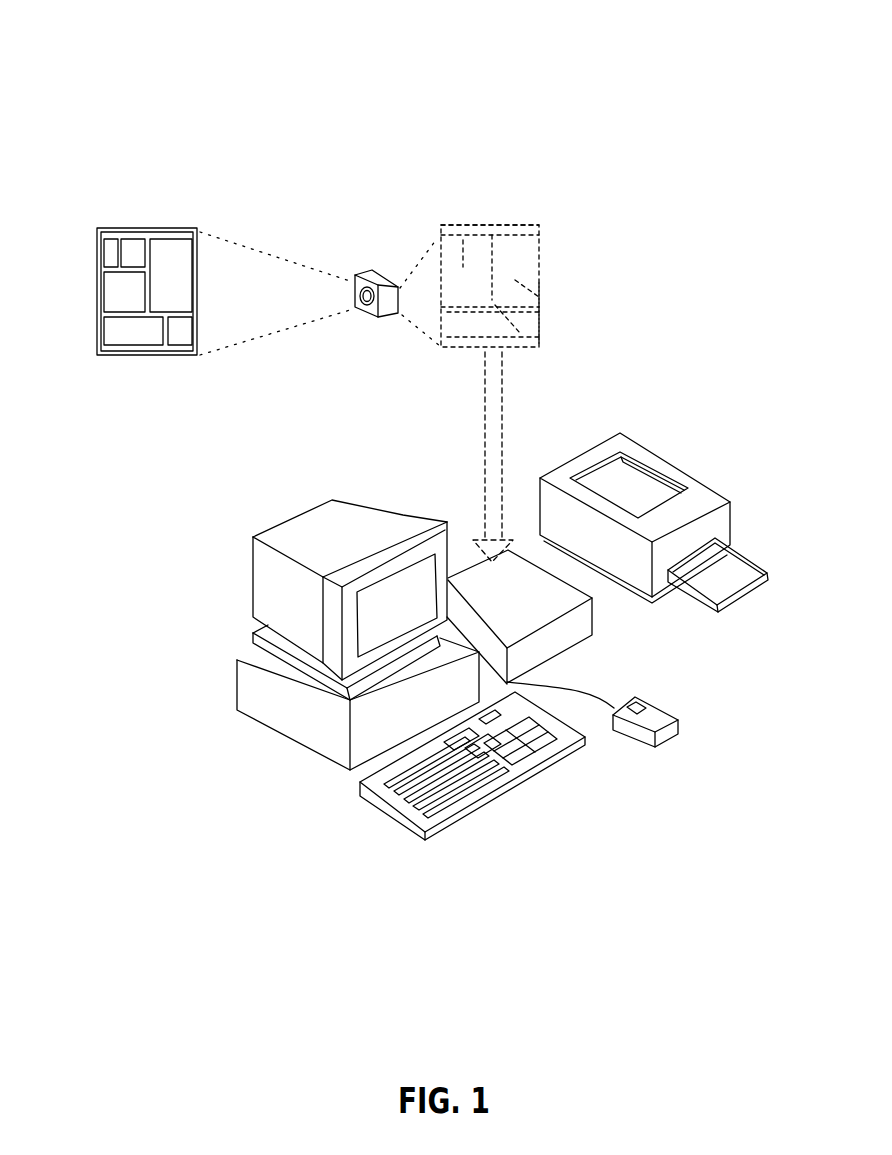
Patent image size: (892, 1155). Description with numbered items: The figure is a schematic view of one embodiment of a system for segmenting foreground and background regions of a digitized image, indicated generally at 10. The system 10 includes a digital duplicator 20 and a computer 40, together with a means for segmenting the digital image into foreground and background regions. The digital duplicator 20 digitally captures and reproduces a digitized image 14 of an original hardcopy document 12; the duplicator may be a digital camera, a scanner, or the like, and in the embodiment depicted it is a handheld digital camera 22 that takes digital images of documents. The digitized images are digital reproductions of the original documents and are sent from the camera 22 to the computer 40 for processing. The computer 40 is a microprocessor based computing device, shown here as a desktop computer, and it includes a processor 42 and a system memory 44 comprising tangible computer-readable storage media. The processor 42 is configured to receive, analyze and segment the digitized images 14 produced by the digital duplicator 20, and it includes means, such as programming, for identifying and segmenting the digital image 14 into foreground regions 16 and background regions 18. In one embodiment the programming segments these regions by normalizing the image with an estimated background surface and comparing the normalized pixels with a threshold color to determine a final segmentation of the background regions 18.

The system for segmenting foreground and background regions 10 is at (235, 68).
The original hardcopy document 12 is at (135, 227).
The digitized image 14 is at (537, 246).
The foreground regions 16 is at (477, 214).
The background regions 18 is at (552, 303).
The digital duplicator 20 is at (392, 223).
The handheld digital camera 22 is at (368, 272).
The computer 40 is at (216, 819).
The processor 42 is at (258, 710).
The system memory 44 is at (523, 611).